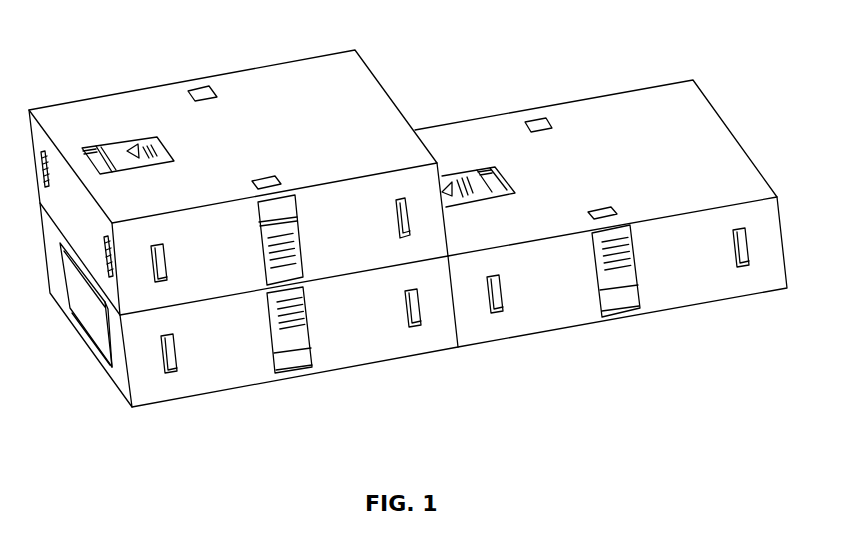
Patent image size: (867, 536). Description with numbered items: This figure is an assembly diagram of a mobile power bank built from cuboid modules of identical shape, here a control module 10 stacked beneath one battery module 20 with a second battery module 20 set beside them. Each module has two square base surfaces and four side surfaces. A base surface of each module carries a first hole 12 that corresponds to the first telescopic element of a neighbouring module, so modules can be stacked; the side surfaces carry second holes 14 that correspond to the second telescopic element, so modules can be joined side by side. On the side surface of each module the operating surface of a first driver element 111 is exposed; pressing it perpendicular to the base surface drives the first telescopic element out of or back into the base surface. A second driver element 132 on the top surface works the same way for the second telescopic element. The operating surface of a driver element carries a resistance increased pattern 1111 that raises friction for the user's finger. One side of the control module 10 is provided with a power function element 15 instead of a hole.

The control module 10 is at (239, 336).
The battery module 20 is at (118, 87).
The first hole 12 is at (205, 90).
The second driver element 132 is at (162, 151).
The first driver element 111 is at (469, 292).
The resistance increased pattern 1111 is at (625, 262).
The second hole 14 is at (405, 200).
The power function element 15 is at (85, 316).